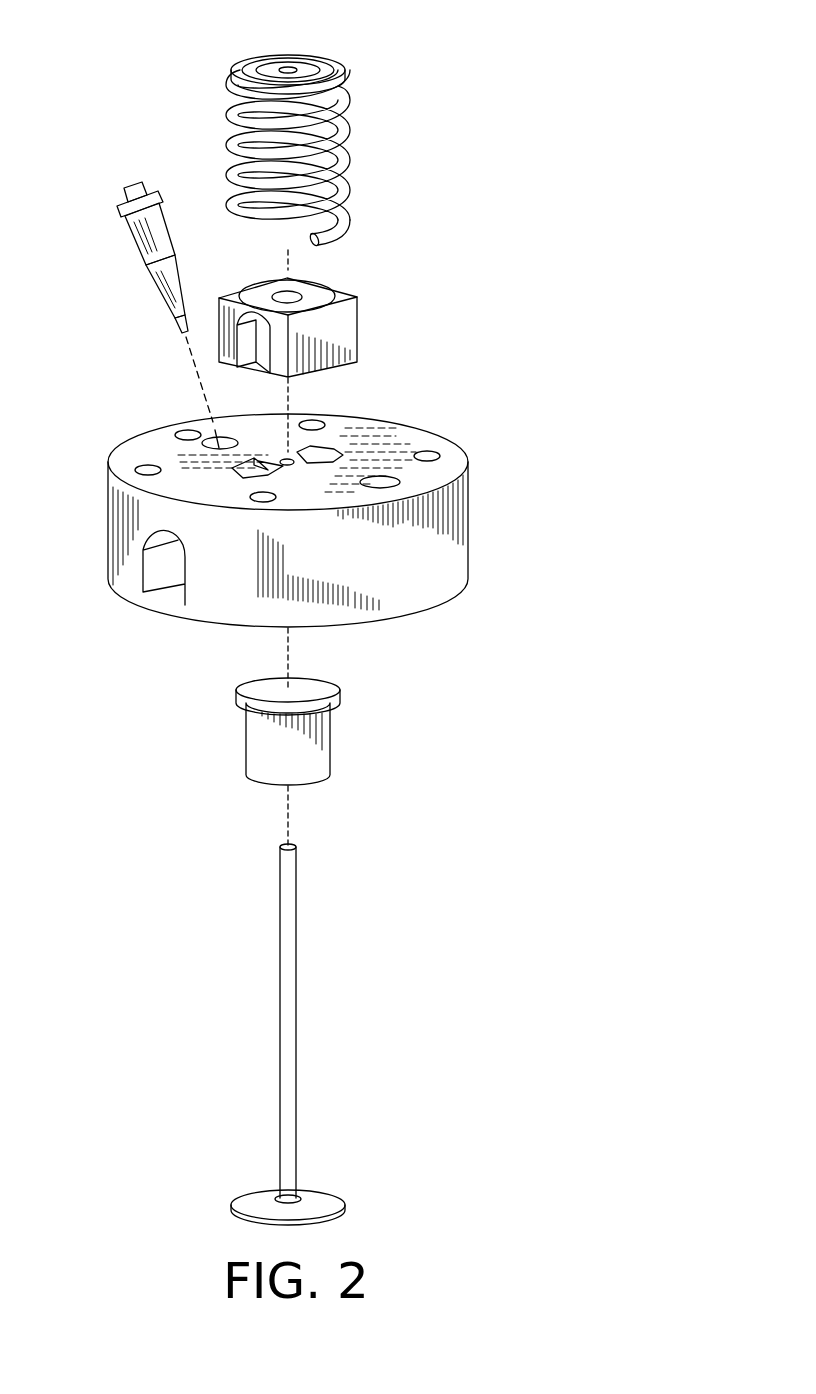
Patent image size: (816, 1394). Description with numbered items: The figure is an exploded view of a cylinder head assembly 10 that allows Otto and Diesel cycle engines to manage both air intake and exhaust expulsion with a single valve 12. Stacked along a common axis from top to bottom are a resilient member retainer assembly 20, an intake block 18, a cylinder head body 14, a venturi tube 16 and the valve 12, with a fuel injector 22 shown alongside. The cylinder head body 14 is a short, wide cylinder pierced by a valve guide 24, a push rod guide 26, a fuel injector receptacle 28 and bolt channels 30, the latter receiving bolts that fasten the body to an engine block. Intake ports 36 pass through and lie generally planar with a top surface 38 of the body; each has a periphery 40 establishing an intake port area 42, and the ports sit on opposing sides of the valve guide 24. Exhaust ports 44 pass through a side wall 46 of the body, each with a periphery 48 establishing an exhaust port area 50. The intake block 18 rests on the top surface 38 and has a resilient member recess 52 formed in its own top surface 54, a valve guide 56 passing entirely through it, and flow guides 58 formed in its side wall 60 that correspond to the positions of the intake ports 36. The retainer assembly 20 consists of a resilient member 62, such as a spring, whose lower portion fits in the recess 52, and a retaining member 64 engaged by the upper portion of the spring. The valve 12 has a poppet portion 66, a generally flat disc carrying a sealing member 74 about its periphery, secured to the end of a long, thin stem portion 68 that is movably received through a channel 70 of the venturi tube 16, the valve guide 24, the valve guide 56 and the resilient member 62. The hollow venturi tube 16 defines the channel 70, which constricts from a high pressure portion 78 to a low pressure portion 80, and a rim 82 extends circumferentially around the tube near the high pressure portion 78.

The cylinder head assembly 10 is at (420, 84).
The valve 12 is at (272, 1034).
The cylinder head body 14 is at (290, 518).
The venturi tube 16 is at (278, 729).
The intake block 18 is at (292, 326).
The resilient member retainer assembly 20 is at (324, 131).
The fuel injector 22 is at (130, 244).
The valve guide 24 is at (282, 458).
The push rod guide 26 is at (384, 477).
The fuel injector receptacle 28 is at (186, 436).
The bolt channels 30 is at (136, 471).
The intake ports 36 is at (316, 474).
The top surface 38 is at (216, 497).
The periphery 40 is at (248, 478).
The intake port area 42 is at (330, 444).
The exhaust ports 44 is at (170, 575).
The side wall 46 is at (417, 584).
The periphery 48 is at (186, 566).
The exhaust port area 50 is at (140, 572).
The resilient member recess 52 is at (342, 290).
The top surface 54 is at (235, 292).
The valve guide 56 is at (300, 292).
The flow guides 58 is at (250, 378).
The side wall 60 is at (324, 343).
The resilient member 62 is at (345, 190).
The retaining member 64 is at (326, 58).
The poppet portion 66 is at (322, 1192).
The stem portion 68 is at (297, 950).
The channel 70 is at (332, 665).
The sealing member 74 is at (235, 1212).
The high pressure portion 78 is at (230, 710).
The low pressure portion 80 is at (240, 795).
The rim 82 is at (340, 702).